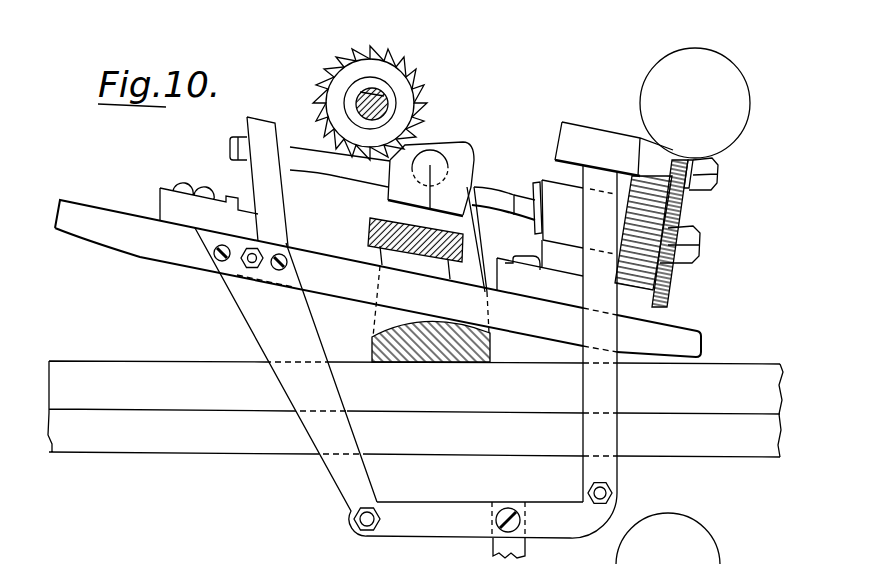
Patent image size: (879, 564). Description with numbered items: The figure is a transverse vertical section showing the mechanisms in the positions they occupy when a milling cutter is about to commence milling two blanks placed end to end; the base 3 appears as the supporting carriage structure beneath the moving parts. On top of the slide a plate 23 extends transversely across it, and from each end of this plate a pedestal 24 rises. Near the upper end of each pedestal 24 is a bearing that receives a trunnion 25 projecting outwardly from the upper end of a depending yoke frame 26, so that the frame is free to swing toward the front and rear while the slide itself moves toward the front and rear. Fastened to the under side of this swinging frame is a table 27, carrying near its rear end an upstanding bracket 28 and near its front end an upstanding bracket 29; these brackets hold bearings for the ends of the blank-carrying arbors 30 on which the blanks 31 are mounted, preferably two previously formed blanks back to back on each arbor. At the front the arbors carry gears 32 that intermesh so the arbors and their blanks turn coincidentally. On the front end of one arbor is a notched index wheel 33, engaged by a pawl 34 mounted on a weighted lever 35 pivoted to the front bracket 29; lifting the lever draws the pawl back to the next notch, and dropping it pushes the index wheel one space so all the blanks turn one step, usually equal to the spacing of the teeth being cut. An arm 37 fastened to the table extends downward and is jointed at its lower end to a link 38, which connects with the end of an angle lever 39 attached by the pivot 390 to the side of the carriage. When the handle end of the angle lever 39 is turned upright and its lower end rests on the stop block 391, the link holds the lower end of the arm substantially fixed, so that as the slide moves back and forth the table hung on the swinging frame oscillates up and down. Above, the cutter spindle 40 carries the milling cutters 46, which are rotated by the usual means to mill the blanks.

The base 3 is at (415, 409).
The plate 23 is at (452, 363).
The pedestal 24 is at (486, 250).
The trunnion 25 is at (466, 146).
The depending yoke frame 26 is at (378, 210).
The table 27 is at (378, 278).
The upstanding bracket 28 is at (242, 183).
The upstanding bracket 29 is at (556, 235).
The blank-carrying arbor 30 is at (525, 196).
The blank 31 is at (474, 178).
The gear 32 is at (672, 200).
The notched index wheel 33 is at (673, 283).
The pawl 34 is at (687, 158).
The weighted lever 35 is at (712, 184).
The arm 37 is at (286, 382).
The link 38 is at (485, 515).
The angle lever 39 is at (614, 312).
The cutter spindle 40 is at (385, 100).
The milling cutter 46 is at (414, 63).
The pivot 390 is at (614, 493).
The stop block 391 is at (527, 548).